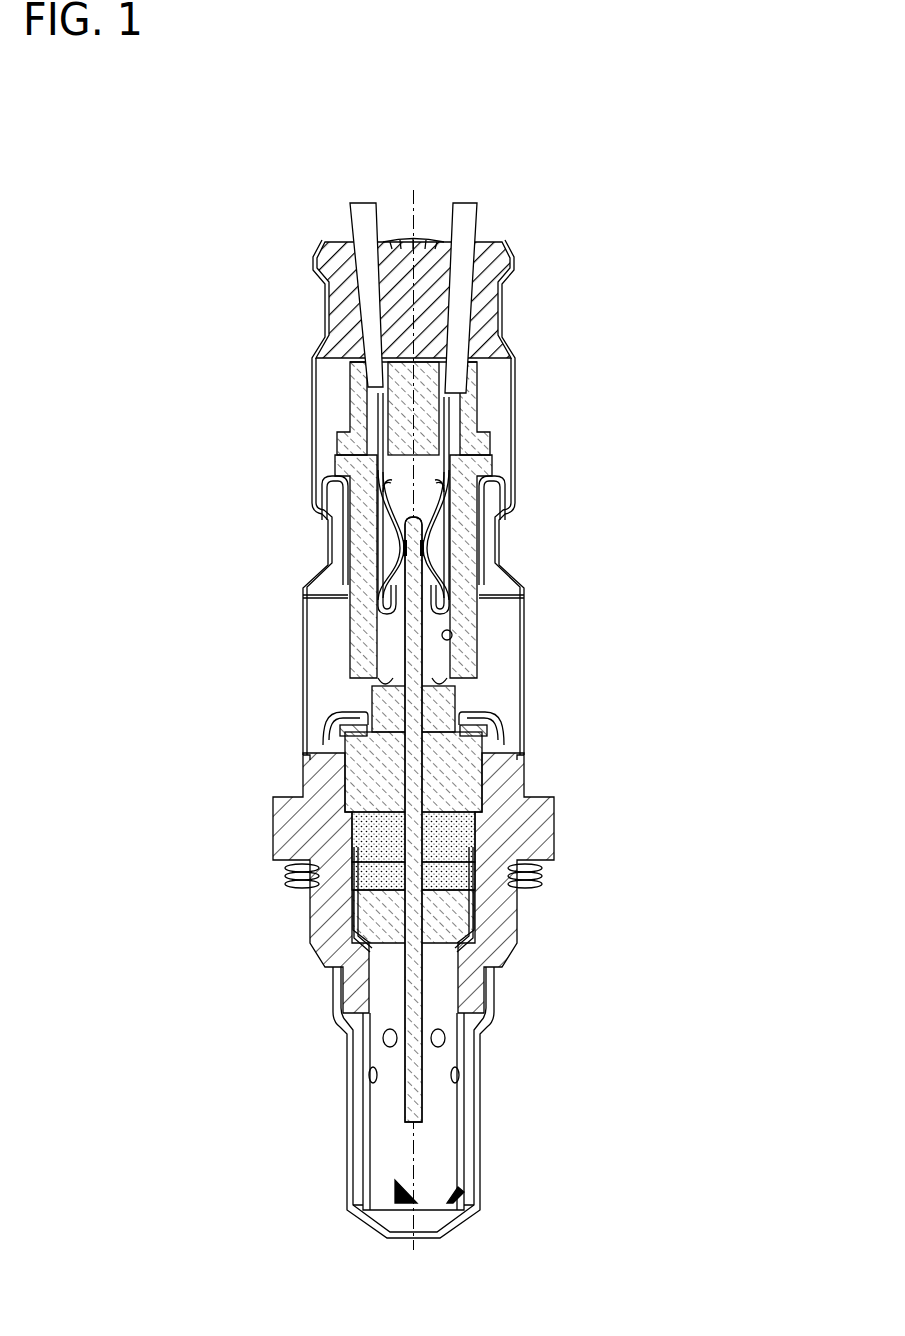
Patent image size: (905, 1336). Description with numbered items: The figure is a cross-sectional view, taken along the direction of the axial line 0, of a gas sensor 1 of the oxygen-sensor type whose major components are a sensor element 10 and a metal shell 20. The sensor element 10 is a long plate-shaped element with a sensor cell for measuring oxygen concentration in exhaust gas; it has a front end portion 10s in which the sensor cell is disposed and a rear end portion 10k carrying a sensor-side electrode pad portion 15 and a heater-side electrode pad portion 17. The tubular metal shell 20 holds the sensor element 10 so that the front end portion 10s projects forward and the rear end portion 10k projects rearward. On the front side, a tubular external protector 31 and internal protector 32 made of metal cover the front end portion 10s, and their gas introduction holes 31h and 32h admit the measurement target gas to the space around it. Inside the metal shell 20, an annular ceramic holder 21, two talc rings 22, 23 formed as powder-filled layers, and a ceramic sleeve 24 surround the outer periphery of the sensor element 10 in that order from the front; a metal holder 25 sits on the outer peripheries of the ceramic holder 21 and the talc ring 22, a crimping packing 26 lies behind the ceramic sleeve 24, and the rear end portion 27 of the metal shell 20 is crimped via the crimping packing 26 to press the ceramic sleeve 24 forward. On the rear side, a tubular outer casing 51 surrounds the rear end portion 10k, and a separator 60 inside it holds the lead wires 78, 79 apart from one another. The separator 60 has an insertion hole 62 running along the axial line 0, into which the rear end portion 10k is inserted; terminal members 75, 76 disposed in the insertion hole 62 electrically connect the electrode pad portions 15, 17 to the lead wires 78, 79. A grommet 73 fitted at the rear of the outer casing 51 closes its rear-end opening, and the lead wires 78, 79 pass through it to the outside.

The gas sensor 1 is at (564, 230).
The axial line 0 is at (412, 691).
The sensor element 10 is at (405, 743).
The rear end portion 10k is at (402, 626).
The front end portion 10s is at (405, 1110).
The sensor-side electrode pad portion 15 is at (426, 550).
The heater-side electrode pad portion 17 is at (402, 553).
The metal shell 20 is at (295, 838).
The ceramic holder 21 is at (457, 918).
The talc ring 22 is at (457, 877).
The talc ring 23 is at (460, 840).
The ceramic sleeve 24 is at (455, 787).
The metal holder 25 is at (356, 915).
The crimping packing 26 is at (500, 735).
The rear end portion 27 is at (470, 720).
The external protector 31 is at (483, 1108).
The gas introduction hole 31h is at (483, 1176).
The internal protector 32 is at (466, 1158).
The gas introduction hole 32h is at (442, 1046).
The outer casing 51 is at (525, 678).
The separator 60 is at (470, 618).
The insertion hole 62 is at (452, 642).
The grommet 73 is at (328, 300).
The terminal member 75 is at (335, 514).
The terminal member 76 is at (490, 512).
The lead wire 78 is at (352, 212).
The lead wire 79 is at (470, 218).